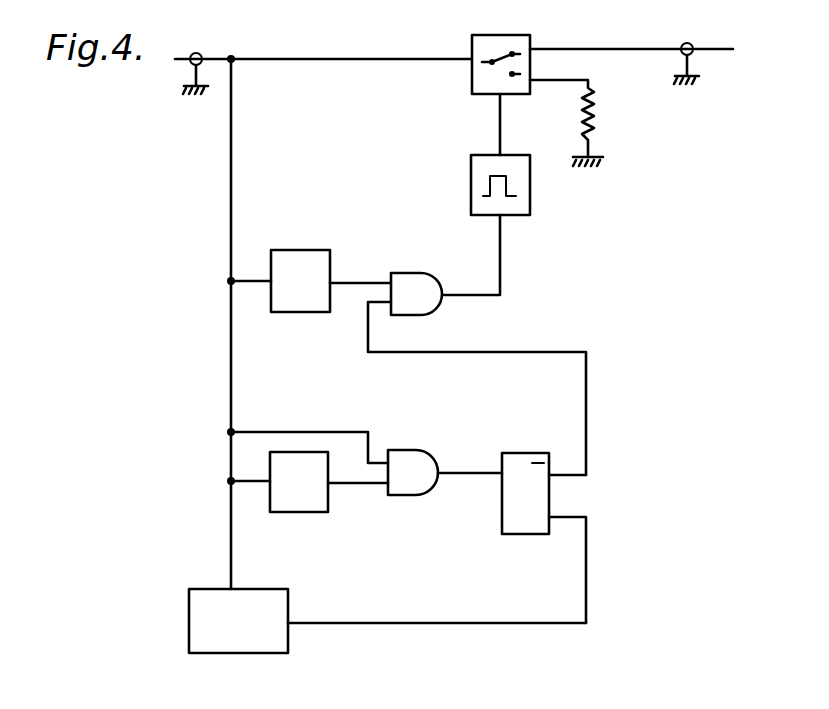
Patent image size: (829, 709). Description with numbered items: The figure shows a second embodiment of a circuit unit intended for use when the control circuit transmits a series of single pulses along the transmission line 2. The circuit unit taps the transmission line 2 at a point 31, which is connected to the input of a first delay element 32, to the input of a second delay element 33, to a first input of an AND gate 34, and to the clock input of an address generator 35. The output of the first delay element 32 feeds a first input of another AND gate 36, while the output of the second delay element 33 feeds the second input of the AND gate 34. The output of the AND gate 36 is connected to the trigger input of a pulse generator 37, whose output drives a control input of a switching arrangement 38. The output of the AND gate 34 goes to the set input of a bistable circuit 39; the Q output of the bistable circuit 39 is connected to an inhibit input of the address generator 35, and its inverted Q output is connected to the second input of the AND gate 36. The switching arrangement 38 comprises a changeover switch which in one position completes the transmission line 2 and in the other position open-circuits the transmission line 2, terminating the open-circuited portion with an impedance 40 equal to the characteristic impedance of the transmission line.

The transmission line 2 is at (199, 52).
The point 31 is at (237, 52).
The first delay element 32 is at (307, 250).
The second delay element 33 is at (328, 506).
The AND gate 34 is at (420, 450).
The address generator 35 is at (290, 603).
The AND gate 36 is at (420, 273).
The pulse generator 37 is at (471, 178).
The switching arrangement 38 is at (515, 35).
The bistable circuit 39 is at (525, 453).
The impedance 40 is at (592, 116).